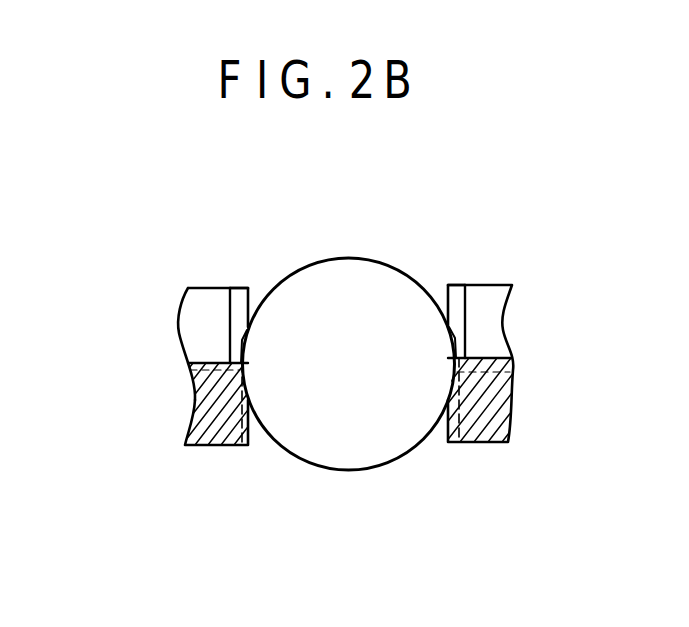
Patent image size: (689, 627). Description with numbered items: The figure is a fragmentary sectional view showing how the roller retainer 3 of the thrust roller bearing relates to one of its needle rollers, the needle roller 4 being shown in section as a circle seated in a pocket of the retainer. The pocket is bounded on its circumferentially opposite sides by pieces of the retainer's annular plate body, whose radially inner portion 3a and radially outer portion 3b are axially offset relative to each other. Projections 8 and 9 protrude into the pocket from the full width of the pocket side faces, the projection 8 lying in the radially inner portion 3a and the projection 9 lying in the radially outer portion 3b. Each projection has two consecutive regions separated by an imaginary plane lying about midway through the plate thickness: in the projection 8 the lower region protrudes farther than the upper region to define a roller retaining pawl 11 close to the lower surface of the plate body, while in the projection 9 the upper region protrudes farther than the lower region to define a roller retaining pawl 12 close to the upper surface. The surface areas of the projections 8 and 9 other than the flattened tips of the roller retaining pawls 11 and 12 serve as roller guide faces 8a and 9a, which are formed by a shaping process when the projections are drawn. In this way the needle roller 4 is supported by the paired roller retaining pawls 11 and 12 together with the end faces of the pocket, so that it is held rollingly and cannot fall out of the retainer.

The roller retainer 3 is at (487, 278).
The radially inner portion 3a is at (202, 420).
The radially outer portion 3b is at (192, 317).
The needle roller 4 is at (373, 278).
The projection 8 is at (243, 445).
The roller guide face 8a is at (243, 393).
The projection 9 is at (236, 288).
The roller guide face 9a is at (250, 336).
The roller retaining pawl 11 is at (246, 415).
The roller retaining pawl 12 is at (246, 322).